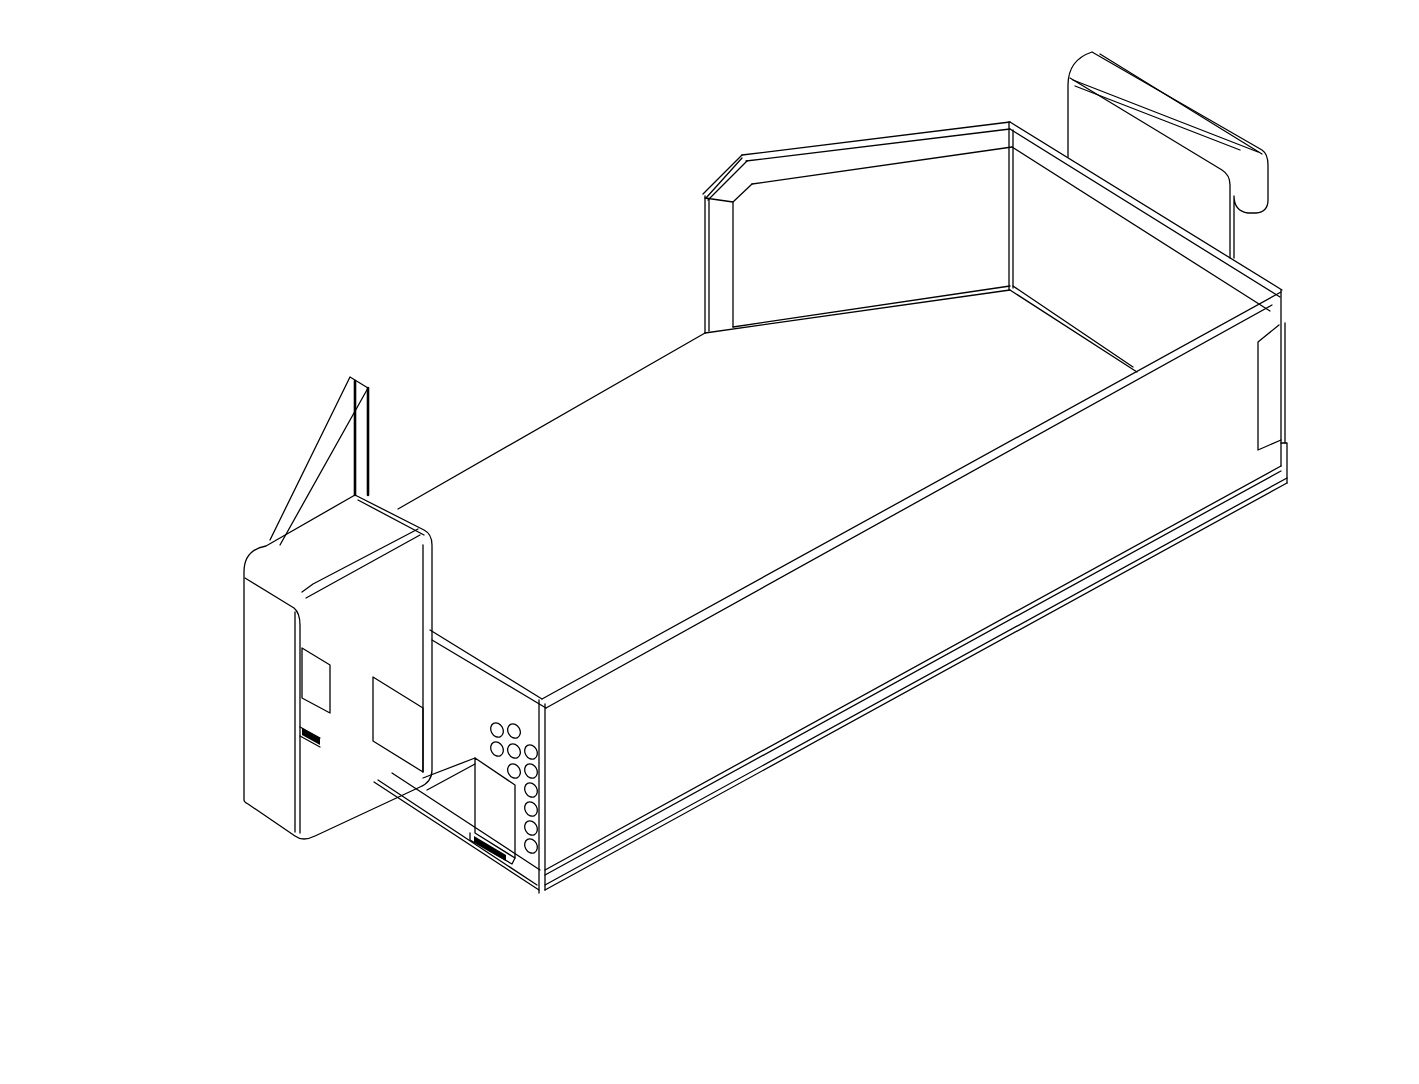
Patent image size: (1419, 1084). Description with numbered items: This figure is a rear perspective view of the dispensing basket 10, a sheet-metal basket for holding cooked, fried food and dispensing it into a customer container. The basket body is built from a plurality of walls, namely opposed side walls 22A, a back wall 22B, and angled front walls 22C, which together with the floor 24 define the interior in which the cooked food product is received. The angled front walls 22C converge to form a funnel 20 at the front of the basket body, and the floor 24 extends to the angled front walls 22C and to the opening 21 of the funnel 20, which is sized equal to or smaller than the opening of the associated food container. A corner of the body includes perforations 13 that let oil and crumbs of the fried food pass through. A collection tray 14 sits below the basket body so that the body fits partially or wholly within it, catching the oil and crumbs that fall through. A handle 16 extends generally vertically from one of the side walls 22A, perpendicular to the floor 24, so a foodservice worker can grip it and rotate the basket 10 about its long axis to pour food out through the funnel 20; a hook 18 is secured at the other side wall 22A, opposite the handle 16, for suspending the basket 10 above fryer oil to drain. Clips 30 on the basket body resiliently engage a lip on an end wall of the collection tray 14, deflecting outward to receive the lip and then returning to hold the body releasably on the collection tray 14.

The dispensing basket 10 is at (345, 303).
The perforations 13 is at (548, 712).
The collection tray 14 is at (594, 856).
The handle 16 is at (360, 527).
The hook 18 is at (1180, 146).
The funnel 20 is at (714, 178).
The opening 21 is at (584, 260).
The side walls 22A is at (1195, 312).
The back wall 22B is at (1040, 470).
The angled front walls 22C is at (847, 203).
The floor 24 is at (736, 475).
The clips 30 is at (317, 675).